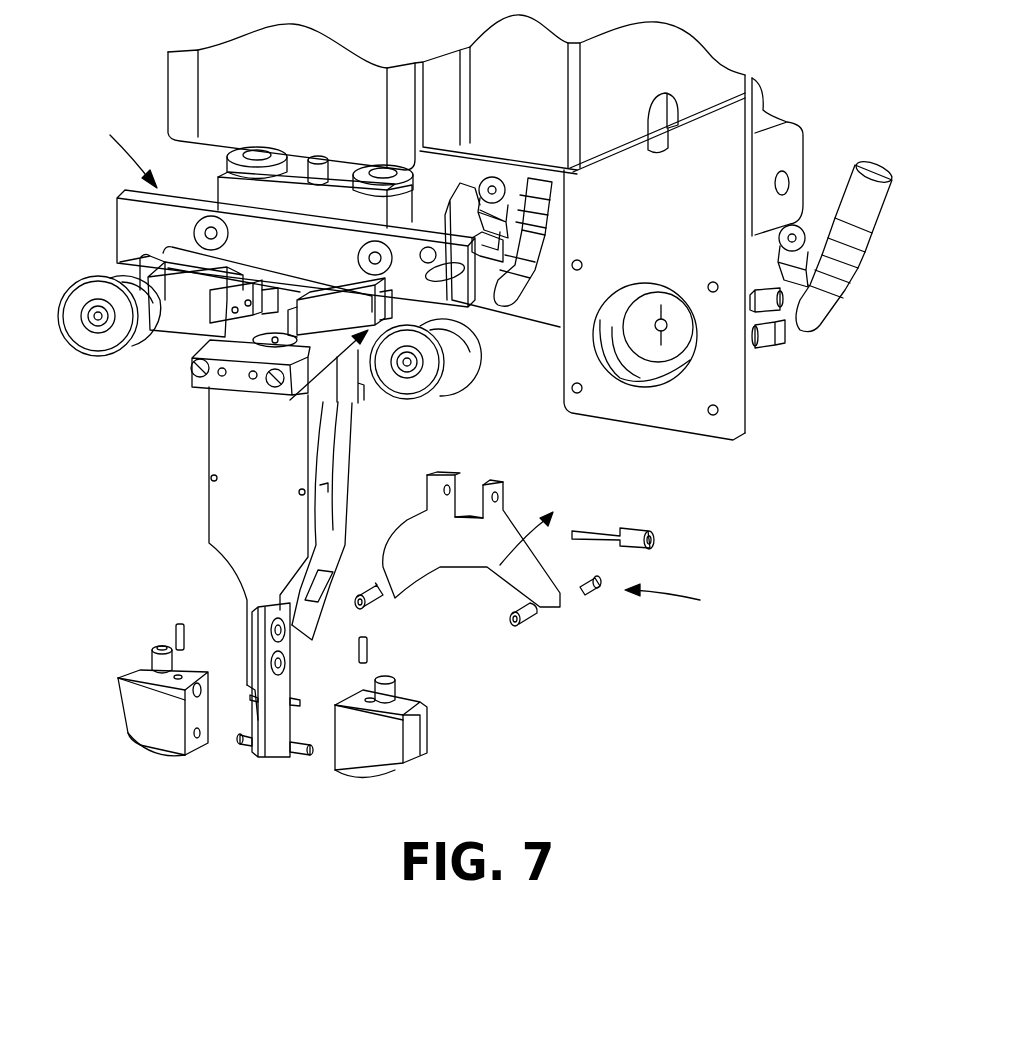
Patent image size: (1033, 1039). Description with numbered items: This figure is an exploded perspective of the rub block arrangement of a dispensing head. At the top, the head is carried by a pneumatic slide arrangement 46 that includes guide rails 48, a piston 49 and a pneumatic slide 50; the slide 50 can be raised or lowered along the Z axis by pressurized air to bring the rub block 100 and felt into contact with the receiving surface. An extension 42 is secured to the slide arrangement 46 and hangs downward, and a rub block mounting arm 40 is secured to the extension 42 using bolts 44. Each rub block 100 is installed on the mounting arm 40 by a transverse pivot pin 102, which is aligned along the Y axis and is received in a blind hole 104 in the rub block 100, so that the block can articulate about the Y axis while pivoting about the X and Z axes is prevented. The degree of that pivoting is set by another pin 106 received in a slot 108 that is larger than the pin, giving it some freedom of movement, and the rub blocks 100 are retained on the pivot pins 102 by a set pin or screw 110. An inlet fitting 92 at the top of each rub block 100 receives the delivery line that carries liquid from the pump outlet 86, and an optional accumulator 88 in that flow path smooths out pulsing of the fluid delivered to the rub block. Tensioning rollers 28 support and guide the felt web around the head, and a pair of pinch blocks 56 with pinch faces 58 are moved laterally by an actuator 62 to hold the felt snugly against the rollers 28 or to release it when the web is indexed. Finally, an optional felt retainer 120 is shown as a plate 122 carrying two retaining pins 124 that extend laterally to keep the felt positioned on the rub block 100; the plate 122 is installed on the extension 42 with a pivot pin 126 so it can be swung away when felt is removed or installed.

The tensioning rollers 28 is at (100, 345).
The rub block mounting arm 40 is at (268, 755).
The extension 42 is at (232, 528).
The bolts 44 is at (273, 610).
The pneumatic slide arrangement 46 is at (121, 148).
The guide rails 48 is at (257, 150).
The piston 49 is at (318, 162).
The pneumatic slide 50 is at (230, 190).
The pinch blocks 56 is at (182, 318).
The pinch faces 58 is at (140, 284).
The actuator 62 is at (316, 333).
The pump outlet 86 is at (497, 172).
The accumulator 88 is at (555, 178).
The inlet fitting 92 is at (152, 658).
The rub block 100 is at (150, 735).
The pivot pin 102 is at (242, 745).
The blind hole 104 is at (195, 735).
The pin 106 is at (252, 698).
The slot 108 is at (195, 690).
The set pin or screw 110 is at (176, 630).
The felt retainer 120 is at (658, 595).
The plate 122 is at (490, 545).
The retaining pins 124 is at (372, 590).
The pivot pin 126 is at (615, 535).